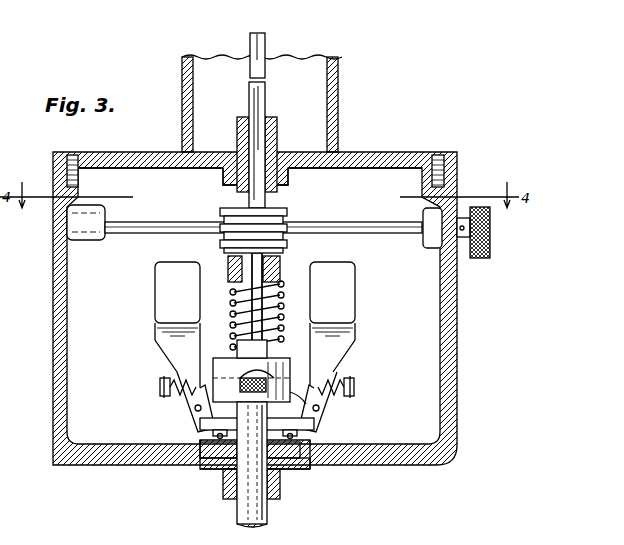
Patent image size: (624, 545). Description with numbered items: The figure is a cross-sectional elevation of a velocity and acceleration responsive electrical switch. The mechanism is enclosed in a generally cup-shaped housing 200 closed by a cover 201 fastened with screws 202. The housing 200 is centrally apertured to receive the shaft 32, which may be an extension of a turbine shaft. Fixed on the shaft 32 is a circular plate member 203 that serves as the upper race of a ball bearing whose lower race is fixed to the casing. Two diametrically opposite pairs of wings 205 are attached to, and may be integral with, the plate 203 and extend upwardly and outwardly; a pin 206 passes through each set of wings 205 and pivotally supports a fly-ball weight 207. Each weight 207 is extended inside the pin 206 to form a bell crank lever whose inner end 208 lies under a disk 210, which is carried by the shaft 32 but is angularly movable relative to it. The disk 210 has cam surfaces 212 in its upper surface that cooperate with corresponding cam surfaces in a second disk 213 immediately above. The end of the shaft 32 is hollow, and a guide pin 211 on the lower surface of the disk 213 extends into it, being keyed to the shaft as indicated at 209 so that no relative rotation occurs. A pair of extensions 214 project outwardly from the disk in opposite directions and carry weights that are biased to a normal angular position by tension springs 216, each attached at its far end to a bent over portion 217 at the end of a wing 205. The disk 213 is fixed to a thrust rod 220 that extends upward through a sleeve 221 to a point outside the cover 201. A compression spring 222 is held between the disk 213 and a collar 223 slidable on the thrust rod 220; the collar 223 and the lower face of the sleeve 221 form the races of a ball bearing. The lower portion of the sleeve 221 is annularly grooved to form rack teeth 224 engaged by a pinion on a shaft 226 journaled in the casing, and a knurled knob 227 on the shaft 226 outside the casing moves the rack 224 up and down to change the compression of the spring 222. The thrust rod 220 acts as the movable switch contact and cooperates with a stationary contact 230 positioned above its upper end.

The housing 200 is at (447, 350).
The cover 201 is at (371, 163).
The screws 202 is at (72, 156).
The circular plate member 203 is at (305, 440).
The wings 205 is at (192, 400).
The pin 206 is at (200, 414).
The fly-ball weight 207 is at (156, 298).
The inner end of the lever 208 is at (218, 392).
The key 209 is at (205, 462).
The disk 210 is at (320, 401).
The guide pin 211 is at (228, 483).
The cam surfaces 212 is at (300, 365).
The second disk 213 is at (273, 358).
The extensions 214 is at (207, 429).
The tension springs 216 is at (174, 378).
The bent over portion 217 is at (160, 389).
The thrust rod 220 is at (270, 292).
The sleeve 221 is at (278, 141).
The compression spring 222 is at (238, 312).
The collar 223 is at (230, 265).
The rack teeth 224 is at (288, 221).
The shaft 226 is at (135, 226).
The knurled knob 227 is at (479, 258).
The stationary contact 230 is at (259, 52).
The shaft 32 is at (264, 511).